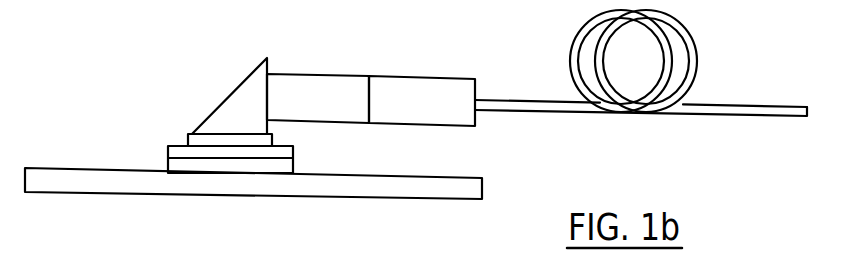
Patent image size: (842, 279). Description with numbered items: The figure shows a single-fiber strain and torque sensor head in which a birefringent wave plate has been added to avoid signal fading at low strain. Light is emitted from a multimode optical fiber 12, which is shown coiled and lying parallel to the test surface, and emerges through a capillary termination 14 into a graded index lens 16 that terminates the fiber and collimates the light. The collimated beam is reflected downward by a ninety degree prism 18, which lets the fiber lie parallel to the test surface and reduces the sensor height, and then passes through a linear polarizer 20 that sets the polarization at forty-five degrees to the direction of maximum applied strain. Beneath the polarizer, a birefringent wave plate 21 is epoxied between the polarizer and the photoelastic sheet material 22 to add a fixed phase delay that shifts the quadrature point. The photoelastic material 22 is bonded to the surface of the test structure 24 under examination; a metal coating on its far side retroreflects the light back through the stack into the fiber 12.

The multimode optical fiber 12 is at (745, 104).
The capillary termination 14 is at (421, 77).
The graded index (GRIN) lens 16 is at (318, 75).
The 90° prism 18 is at (228, 97).
The linear polarizer 20 is at (187, 138).
The birefringent wave plate 21 is at (167, 153).
The photoelastic sheet material 22 is at (295, 171).
The test structure 24 is at (88, 210).